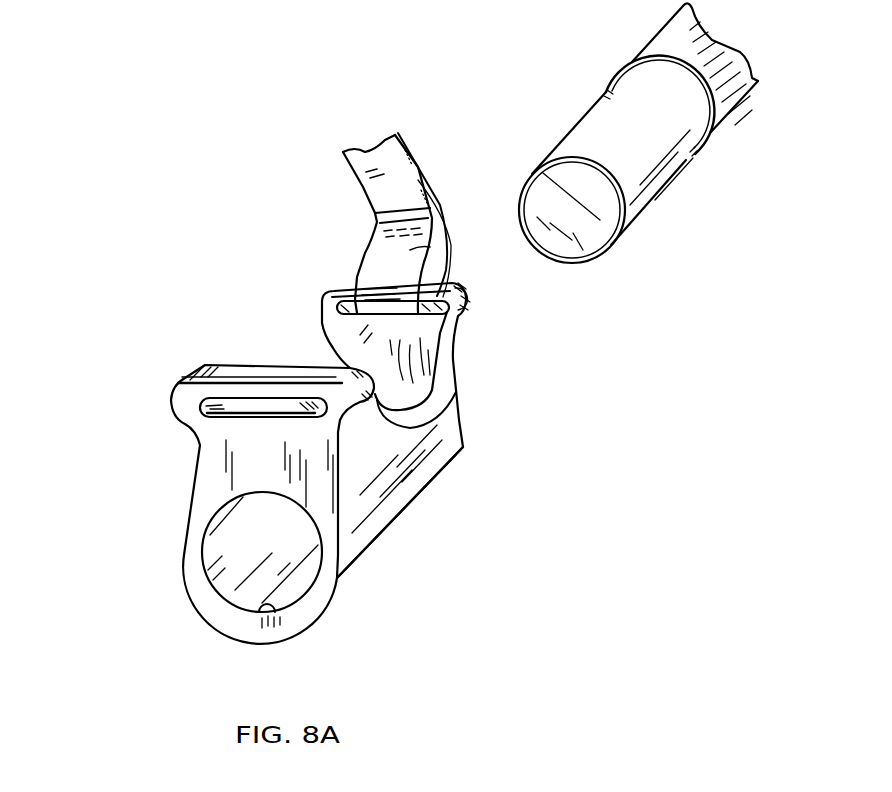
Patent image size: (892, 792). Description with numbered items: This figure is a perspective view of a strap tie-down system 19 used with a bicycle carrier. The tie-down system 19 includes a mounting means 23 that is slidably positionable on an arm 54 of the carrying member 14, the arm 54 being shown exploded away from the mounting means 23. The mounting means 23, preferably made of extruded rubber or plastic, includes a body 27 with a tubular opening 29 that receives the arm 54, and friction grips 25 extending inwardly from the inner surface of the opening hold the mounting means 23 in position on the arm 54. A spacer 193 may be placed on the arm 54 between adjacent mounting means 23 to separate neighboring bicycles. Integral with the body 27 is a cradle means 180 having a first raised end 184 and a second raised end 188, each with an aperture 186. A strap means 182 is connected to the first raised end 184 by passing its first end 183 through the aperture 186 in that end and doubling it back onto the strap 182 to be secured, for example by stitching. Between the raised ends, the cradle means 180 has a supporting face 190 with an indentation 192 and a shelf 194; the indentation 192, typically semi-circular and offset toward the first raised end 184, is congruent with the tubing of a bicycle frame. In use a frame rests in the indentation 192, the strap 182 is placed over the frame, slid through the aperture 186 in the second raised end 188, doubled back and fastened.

The tie-down system 19 is at (172, 95).
The carrying member 14 is at (634, 228).
The arm 54 is at (603, 112).
The spacer 193 is at (728, 112).
The strap means 182 is at (388, 158).
The first end of the strap means 183 is at (450, 250).
The cradle means 180 is at (182, 468).
The first raised end 184 is at (458, 322).
The aperture 186 is at (470, 312).
The second raised end 188 is at (220, 362).
The supporting face 190 is at (315, 349).
The indentation 192 is at (442, 377).
The shelf 194 is at (455, 404).
The body 27 is at (414, 502).
The mounting means 23 is at (438, 580).
The tubular opening 29 is at (238, 553).
The friction grip 25 is at (270, 614).